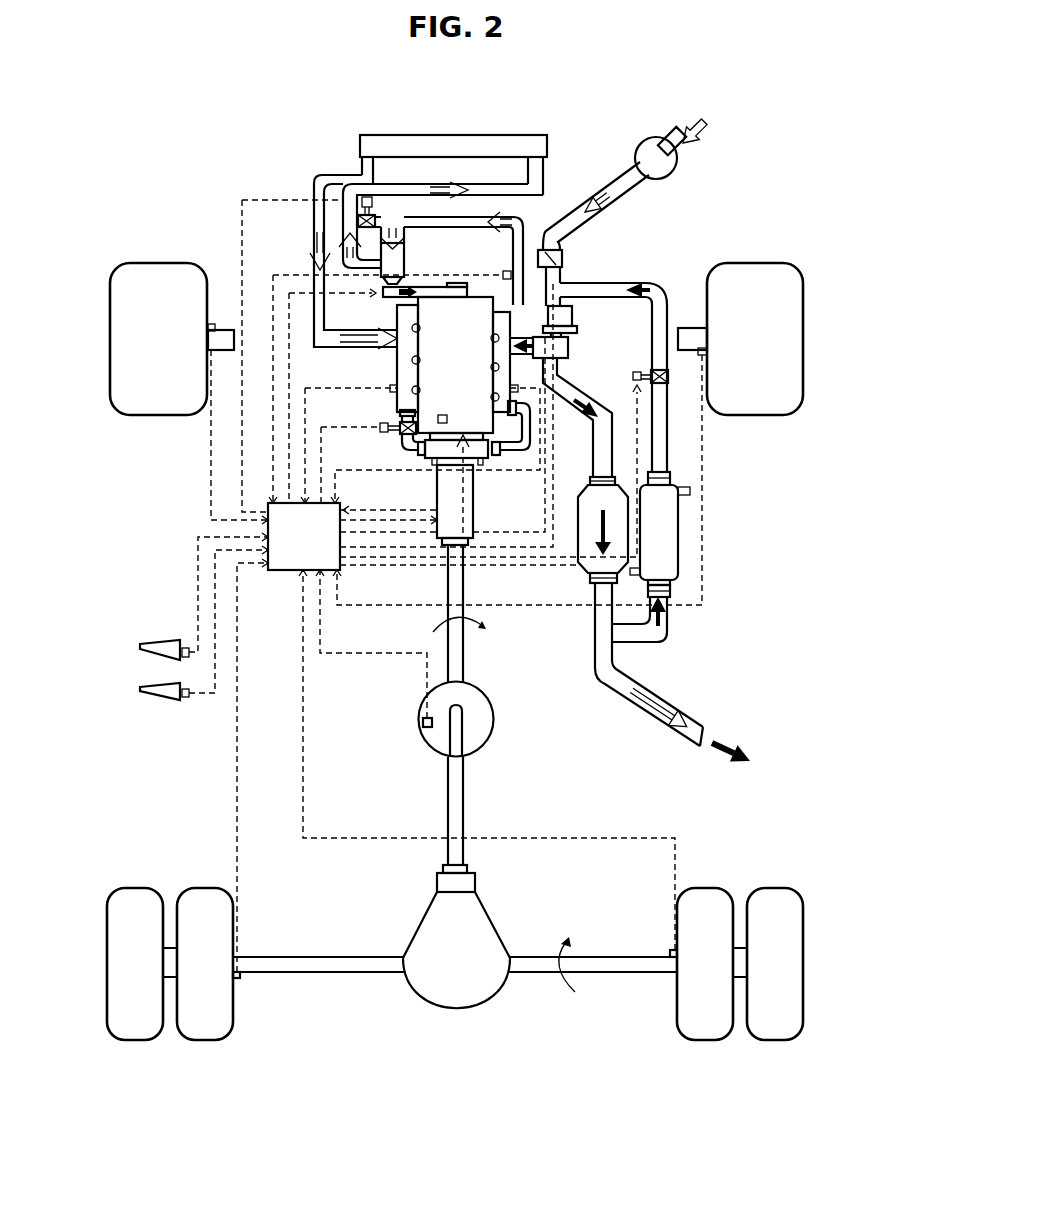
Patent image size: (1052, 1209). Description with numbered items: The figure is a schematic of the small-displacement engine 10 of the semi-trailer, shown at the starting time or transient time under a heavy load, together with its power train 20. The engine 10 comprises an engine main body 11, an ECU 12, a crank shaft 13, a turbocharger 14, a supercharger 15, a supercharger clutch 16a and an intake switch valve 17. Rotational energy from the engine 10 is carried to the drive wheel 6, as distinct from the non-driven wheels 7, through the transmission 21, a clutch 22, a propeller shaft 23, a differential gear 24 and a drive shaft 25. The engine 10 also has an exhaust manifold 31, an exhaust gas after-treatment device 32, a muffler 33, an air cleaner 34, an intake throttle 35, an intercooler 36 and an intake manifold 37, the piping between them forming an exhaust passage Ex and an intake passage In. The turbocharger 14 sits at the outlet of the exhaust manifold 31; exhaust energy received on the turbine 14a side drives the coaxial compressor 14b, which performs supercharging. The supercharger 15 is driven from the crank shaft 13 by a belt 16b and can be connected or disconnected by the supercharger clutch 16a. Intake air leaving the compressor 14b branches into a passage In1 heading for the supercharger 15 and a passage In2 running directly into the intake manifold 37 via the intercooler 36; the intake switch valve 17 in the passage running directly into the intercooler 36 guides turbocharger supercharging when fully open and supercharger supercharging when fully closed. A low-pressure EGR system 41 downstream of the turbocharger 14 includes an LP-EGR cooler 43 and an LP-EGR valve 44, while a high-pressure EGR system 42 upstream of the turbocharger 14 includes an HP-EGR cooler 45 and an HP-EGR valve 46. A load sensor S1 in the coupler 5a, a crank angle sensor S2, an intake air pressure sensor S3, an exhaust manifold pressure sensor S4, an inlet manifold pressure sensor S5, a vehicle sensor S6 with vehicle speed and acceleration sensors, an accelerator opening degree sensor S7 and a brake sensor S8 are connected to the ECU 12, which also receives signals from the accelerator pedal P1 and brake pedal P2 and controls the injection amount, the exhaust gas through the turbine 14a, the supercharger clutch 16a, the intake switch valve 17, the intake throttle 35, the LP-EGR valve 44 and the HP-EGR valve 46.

The coupler 5a is at (494, 719).
The drive wheel 6 is at (141, 887).
The non-driven wheel 7 is at (166, 262).
The engine 10 is at (261, 185).
The engine main body 11 is at (554, 280).
The ECU 12 is at (285, 572).
The crank shaft 13 is at (484, 282).
The turbocharger 14 is at (575, 301).
The turbine 14a is at (570, 347).
The compressor 14b is at (572, 316).
The supercharger 15 is at (405, 259).
The supercharger clutch 16a is at (388, 296).
The belt 16b is at (341, 287).
The intake switch valve 17 is at (313, 184).
The power train 20 is at (470, 658).
The transmission 21 is at (437, 493).
The clutch 22 is at (503, 440).
The propeller shaft 23 is at (464, 786).
The differential gear 24 is at (500, 921).
The drive shaft 25 is at (330, 955).
The exhaust manifold 31 is at (550, 365).
The exhaust gas after-treatment device 32 is at (578, 527).
The muffler 33 is at (701, 727).
The air cleaner 34 is at (677, 165).
The intake throttle 35 is at (570, 232).
The intercooler 36 is at (548, 147).
The intake manifold 37 is at (396, 349).
The low-pressure EGR system 41 is at (691, 513).
The high-pressure EGR system 42 is at (406, 448).
The LP-EGR cooler 43 is at (679, 539).
The LP-EGR valve 44 is at (668, 384).
The HP-EGR cooler 45 is at (484, 463).
The HP-EGR valve 46 is at (398, 425).
The load sensor S1 is at (422, 722).
The crank angle sensor S2 is at (442, 414).
The intake air pressure sensor S3 is at (508, 237).
The exhaust manifold pressure sensor S4 is at (530, 348).
The inlet manifold pressure sensor S5 is at (401, 367).
The vehicle sensor S6 is at (213, 322).
The accelerator opening degree sensor S7 is at (186, 645).
The brake sensor S8 is at (188, 700).
The accelerator pedal P1 is at (140, 646).
The brake pedal P2 is at (140, 689).
The intake passage In is at (324, 172).
The passage heading for the supercharger In1 is at (341, 236).
The passage running directly into the intake manifold In2 is at (356, 184).
The exhaust passage Ex is at (622, 445).